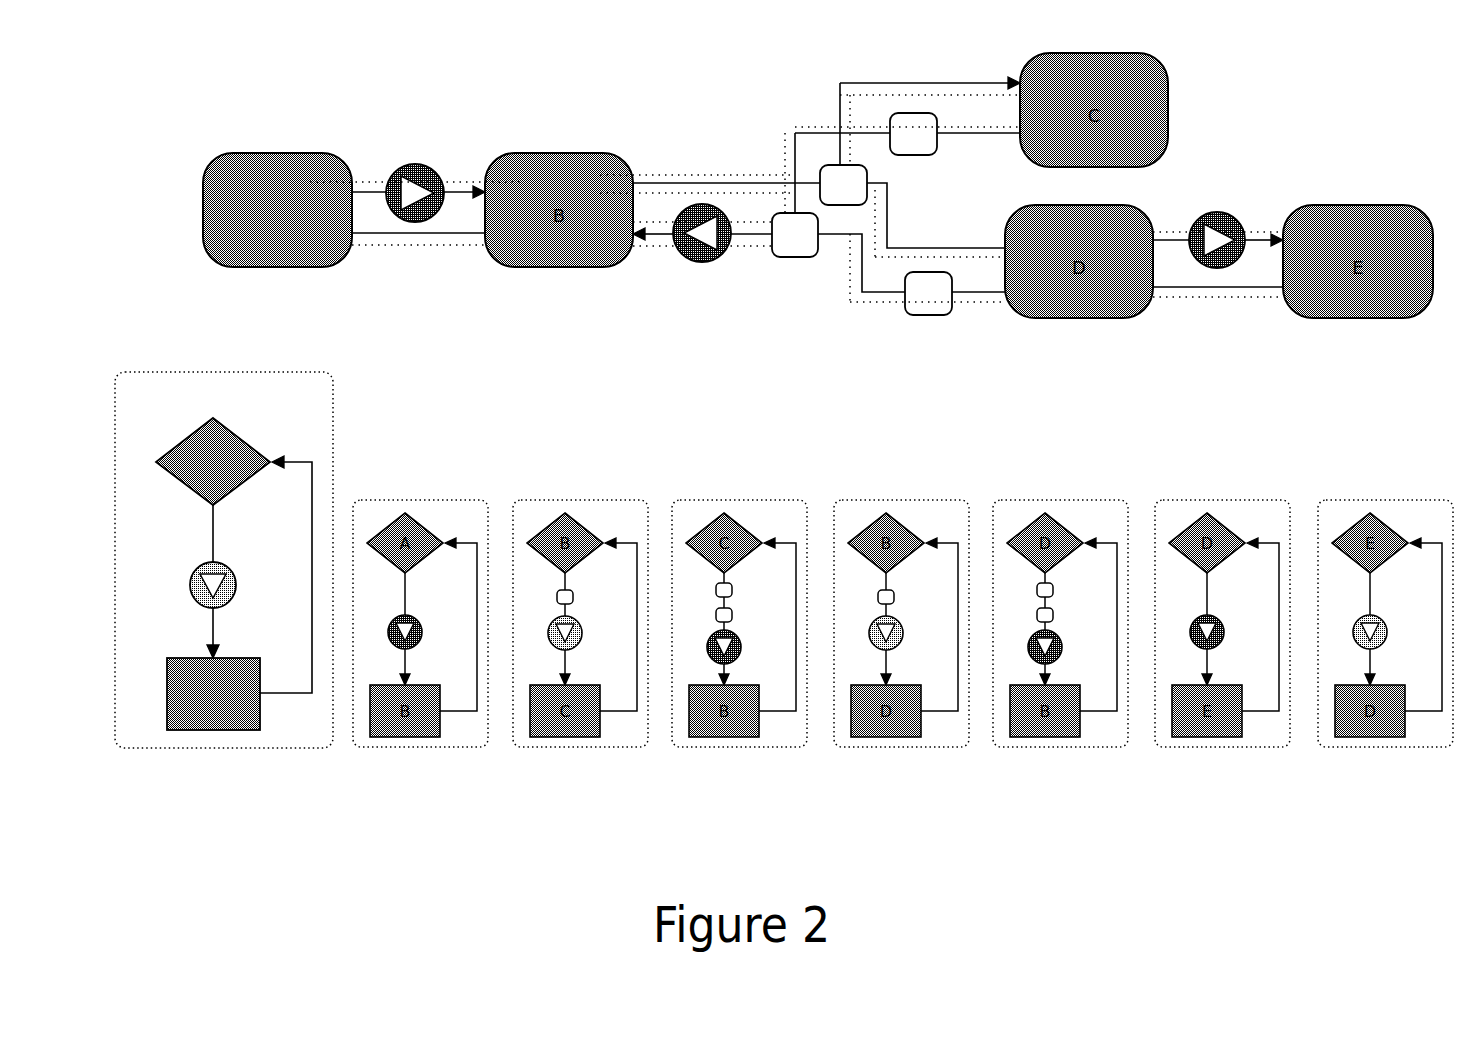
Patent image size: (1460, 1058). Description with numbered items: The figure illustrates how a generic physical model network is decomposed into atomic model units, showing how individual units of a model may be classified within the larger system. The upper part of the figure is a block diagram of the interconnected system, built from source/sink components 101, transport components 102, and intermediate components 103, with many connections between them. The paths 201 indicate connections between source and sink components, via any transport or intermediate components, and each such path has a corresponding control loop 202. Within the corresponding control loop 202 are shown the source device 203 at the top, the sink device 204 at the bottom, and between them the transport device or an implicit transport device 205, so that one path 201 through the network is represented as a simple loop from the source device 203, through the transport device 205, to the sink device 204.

The source/sink component 101 is at (253, 152).
The transport component 102 is at (406, 162).
The intermediate component 103 is at (792, 259).
The path 201 is at (405, 248).
The control loop 202 is at (208, 541).
The source device 203 is at (247, 436).
The sink device 204 is at (160, 661).
The transport device or implicit transport device 205 is at (237, 566).